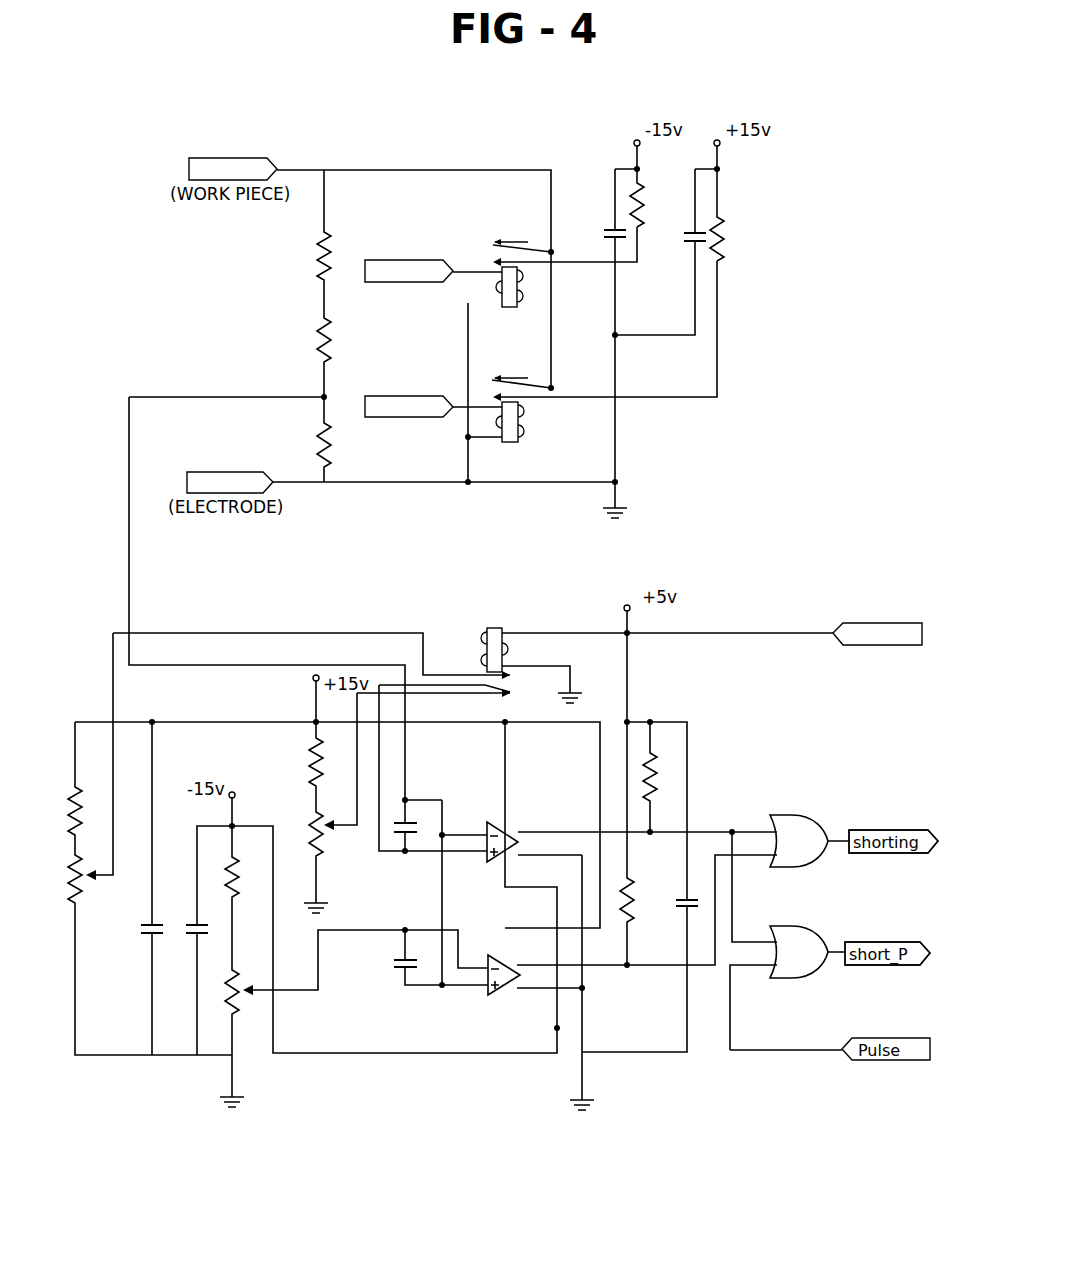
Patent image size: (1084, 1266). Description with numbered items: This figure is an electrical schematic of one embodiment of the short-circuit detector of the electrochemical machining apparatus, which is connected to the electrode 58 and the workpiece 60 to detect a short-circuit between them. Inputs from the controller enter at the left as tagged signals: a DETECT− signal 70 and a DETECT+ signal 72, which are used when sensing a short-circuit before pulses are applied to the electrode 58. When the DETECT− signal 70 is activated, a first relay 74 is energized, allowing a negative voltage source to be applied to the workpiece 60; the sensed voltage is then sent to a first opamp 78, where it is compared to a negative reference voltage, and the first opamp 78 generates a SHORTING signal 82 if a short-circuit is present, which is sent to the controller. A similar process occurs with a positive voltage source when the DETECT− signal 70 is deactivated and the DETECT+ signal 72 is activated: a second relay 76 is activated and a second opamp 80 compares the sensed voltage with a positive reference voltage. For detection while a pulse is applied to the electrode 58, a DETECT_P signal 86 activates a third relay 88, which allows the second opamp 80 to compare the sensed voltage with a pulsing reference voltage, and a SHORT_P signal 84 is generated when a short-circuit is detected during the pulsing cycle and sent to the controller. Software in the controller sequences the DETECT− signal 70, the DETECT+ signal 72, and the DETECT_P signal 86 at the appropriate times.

The electrode 58 is at (208, 472).
The workpiece 60 is at (222, 158).
The DETECT− signal 70 is at (412, 260).
The DETECT+ signal 72 is at (410, 396).
The first relay 74 is at (510, 307).
The second relay 76 is at (512, 443).
The first opamp 78 is at (495, 957).
The second opamp 80 is at (507, 832).
The SHORTING signal 82 is at (892, 830).
The SHORT_P signal 84 is at (888, 940).
The DETECT_P signal 86 is at (887, 623).
The third relay 88 is at (497, 628).